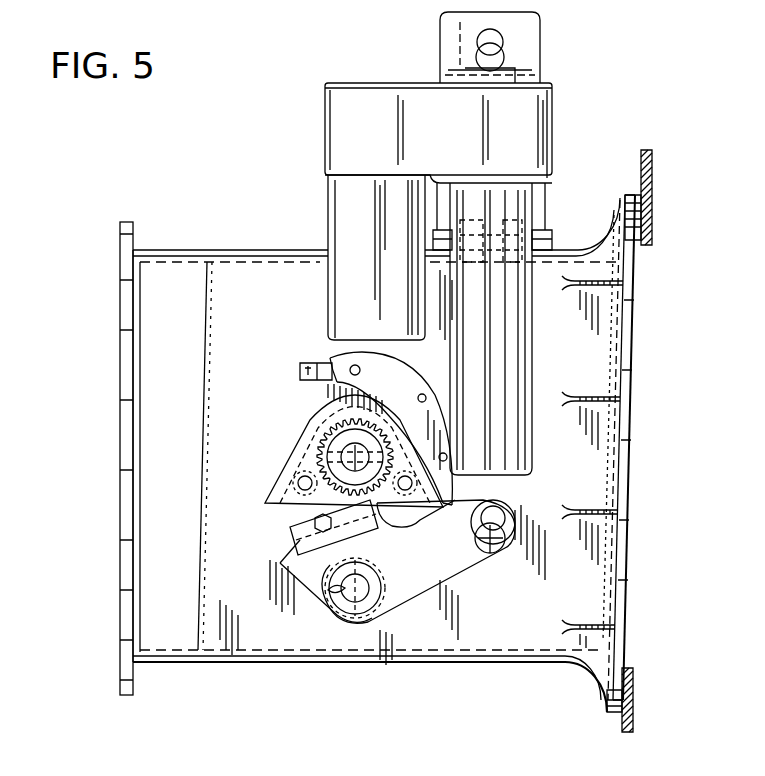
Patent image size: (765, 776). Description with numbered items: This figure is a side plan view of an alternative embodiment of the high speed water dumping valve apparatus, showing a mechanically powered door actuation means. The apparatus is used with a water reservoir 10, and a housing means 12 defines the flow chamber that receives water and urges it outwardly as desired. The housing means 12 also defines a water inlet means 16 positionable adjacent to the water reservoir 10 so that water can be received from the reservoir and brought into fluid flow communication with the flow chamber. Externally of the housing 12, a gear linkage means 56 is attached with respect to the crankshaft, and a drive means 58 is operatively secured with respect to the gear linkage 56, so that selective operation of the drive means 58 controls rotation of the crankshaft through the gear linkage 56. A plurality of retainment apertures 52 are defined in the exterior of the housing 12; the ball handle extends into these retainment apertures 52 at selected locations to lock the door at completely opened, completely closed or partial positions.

The water reservoir 10 is at (648, 150).
The housing means 12 is at (295, 249).
The water inlet means 16 is at (626, 483).
The retainment apertures 52 is at (337, 358).
The gear linkage means 56 is at (283, 563).
The drive means 58 is at (362, 82).